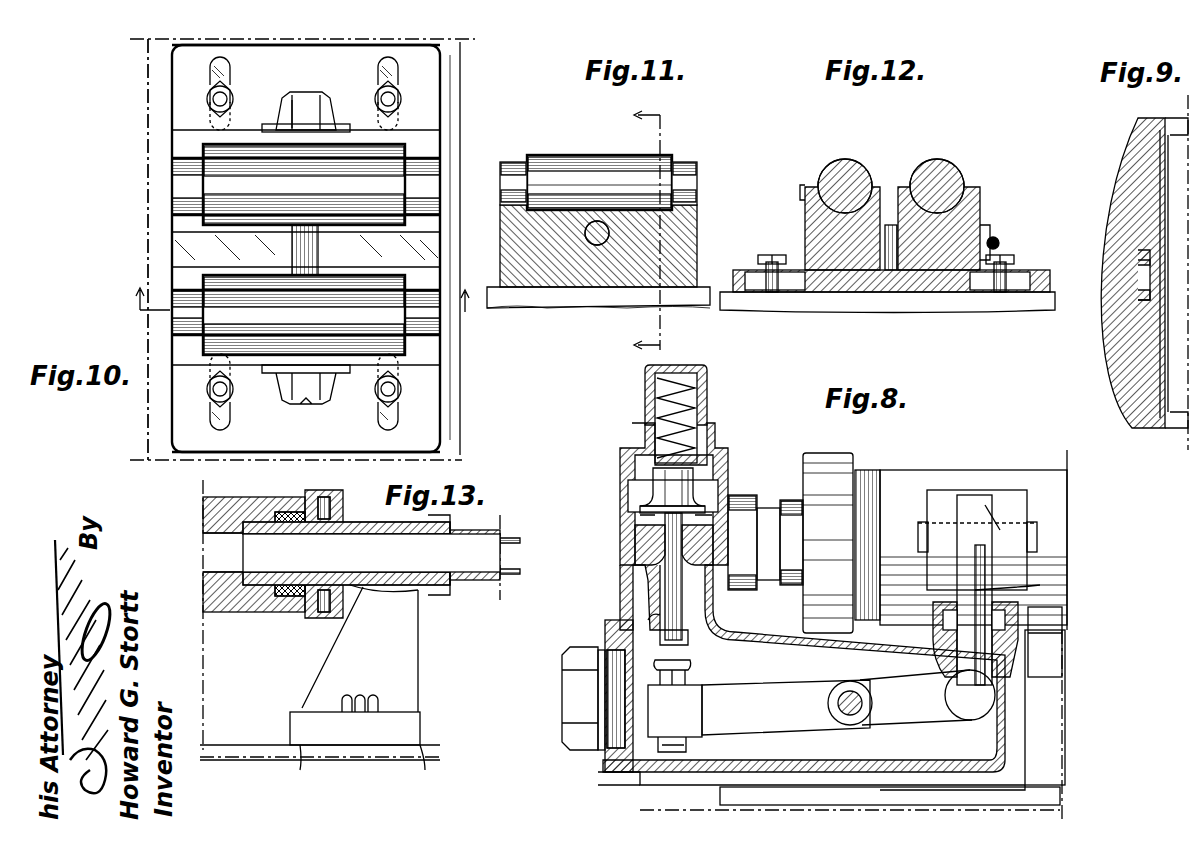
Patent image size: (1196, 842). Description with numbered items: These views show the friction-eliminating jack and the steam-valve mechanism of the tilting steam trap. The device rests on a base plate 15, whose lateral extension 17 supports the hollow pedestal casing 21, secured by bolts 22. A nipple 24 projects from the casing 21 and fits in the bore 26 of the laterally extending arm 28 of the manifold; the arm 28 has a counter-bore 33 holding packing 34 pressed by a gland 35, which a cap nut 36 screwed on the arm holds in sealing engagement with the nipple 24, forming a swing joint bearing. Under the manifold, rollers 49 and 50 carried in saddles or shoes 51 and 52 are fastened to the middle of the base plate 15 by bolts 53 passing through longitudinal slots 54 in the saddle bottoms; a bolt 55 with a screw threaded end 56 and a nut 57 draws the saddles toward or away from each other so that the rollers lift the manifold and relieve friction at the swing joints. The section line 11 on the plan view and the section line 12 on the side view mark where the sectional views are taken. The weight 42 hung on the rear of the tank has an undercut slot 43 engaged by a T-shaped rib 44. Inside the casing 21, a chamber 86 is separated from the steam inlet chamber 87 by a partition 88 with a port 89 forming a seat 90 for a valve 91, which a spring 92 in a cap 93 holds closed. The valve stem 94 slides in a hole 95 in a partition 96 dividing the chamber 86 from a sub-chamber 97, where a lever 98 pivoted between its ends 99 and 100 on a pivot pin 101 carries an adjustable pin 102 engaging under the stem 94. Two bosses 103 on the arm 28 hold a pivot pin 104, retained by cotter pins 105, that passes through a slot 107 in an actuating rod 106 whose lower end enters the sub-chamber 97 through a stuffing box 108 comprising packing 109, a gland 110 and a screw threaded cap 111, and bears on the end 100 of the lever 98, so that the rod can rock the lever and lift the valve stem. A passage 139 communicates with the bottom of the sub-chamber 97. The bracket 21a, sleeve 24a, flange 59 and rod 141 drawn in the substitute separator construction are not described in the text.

In FIG. 10, the section line 11— 11 is at (303, 290).
In FIG. 11, the section line 12— 12 is at (630, 231).
In FIG. 10, the base plate 15 is at (450, 420).
In FIG. 11, the base plate 15 is at (540, 310).
In FIG. 12, the base plate 15 is at (775, 312).
In FIG. 13, the base plate 15 is at (318, 760).
In FIG. 8, the base plate 15 is at (1045, 798).
In FIG. 13, the lateral extension 17 is at (365, 760).
In FIG. 8, the lateral extension 17 is at (690, 800).
In FIG. 8, the hollow pedestal casing 21 is at (620, 590).
In FIG. 13, the bracket 21a is at (352, 650).
In FIG. 13, the bolts 22 is at (360, 700).
In FIG. 8, the nipple 24 is at (790, 585).
In FIG. 13, the sleeve 24a is at (360, 520).
In FIG. 13, the bore 26 is at (275, 612).
In FIG. 13, the arm 28 is at (250, 612).
In FIG. 8, the arm 28 is at (972, 478).
In FIG. 13, the counter-bore 33 is at (300, 570).
In FIG. 13, the packing 34 is at (268, 495).
In FIG. 13, the gland 35 is at (310, 490).
In FIG. 13, the cap nut 36 is at (318, 618).
In FIG. 9, the weight 42 is at (1115, 352).
In FIG. 9, the undercut slot 43 is at (1140, 297).
In FIG. 9, the rib 44 is at (1150, 272).
In FIG. 10, the roller 49 is at (400, 325).
In FIG. 11, the roller 49 is at (665, 170).
In FIG. 12, the roller 49 is at (838, 172).
In FIG. 10, the roller 50 is at (405, 167).
In FIG. 12, the roller 50 is at (950, 178).
In FIG. 8, the roller 50 is at (1045, 640).
In FIG. 10, the saddle 51 is at (425, 390).
In FIG. 11, the saddle 51 is at (690, 235).
In FIG. 12, the saddle 51 is at (845, 270).
In FIG. 10, the saddle 52 is at (437, 88).
In FIG. 12, the saddle 52 is at (945, 270).
In FIG. 8, the saddle 52 is at (1025, 700).
In FIG. 10, the bolts 53 is at (232, 99).
In FIG. 12, the bolts 53 is at (772, 255).
In FIG. 10, the slots 54 is at (230, 72).
In FIG. 12, the slots 54 is at (770, 292).
In FIG. 10, the bolt 55 is at (305, 250).
In FIG. 11, the bolt 55 is at (597, 245).
In FIG. 12, the bolt 55 is at (890, 270).
In FIG. 10, the screw threaded end 56 is at (322, 92).
In FIG. 12, the screw threaded end 56 is at (996, 240).
In FIG. 10, the nut 57 is at (290, 95).
In FIG. 12, the nut 57 is at (992, 235).
In FIG. 9, the flange 59 is at (1160, 428).
In FIG. 8, the chamber 86 is at (633, 580).
In FIG. 8, the steam inlet chamber 87 is at (640, 500).
In FIG. 8, the partition 88 is at (640, 515).
In FIG. 8, the port 89 is at (648, 540).
In FIG. 8, the seat 90 is at (710, 525).
In FIG. 8, the valve 91 is at (705, 480).
In FIG. 8, the spring 92 is at (690, 395).
In FIG. 8, the cap 93 is at (700, 372).
In FIG. 8, the stem 94 is at (705, 640).
In FIG. 8, the hole 95 is at (646, 609).
In FIG. 8, the partition 96 is at (660, 630).
In FIG. 8, the sub-chamber 97 is at (862, 648).
In FIG. 8, the lever 98 is at (808, 672).
In FIG. 8, the lever end 99 is at (675, 711).
In FIG. 8, the lever end 100 is at (927, 697).
In FIG. 8, the pivot pin 101 is at (845, 725).
In FIG. 8, the adjustable pin 102 is at (690, 666).
In FIG. 8, the bosses 103 is at (1020, 500).
In FIG. 8, the pivot pin 104 is at (1040, 535).
In FIG. 8, the cotter pins 105 is at (923, 520).
In FIG. 8, the actuating rod 106 is at (1040, 590).
In FIG. 8, the slot 107 is at (978, 590).
In FIG. 8, the stuffing box 108 is at (940, 635).
In FIG. 8, the packing 109 is at (1000, 665).
In FIG. 8, the gland 110 is at (945, 620).
In FIG. 8, the screw threaded cap 111 is at (900, 631).
In FIG. 8, the passage 139 is at (688, 750).
In FIG. 13, the rod 141 is at (470, 580).